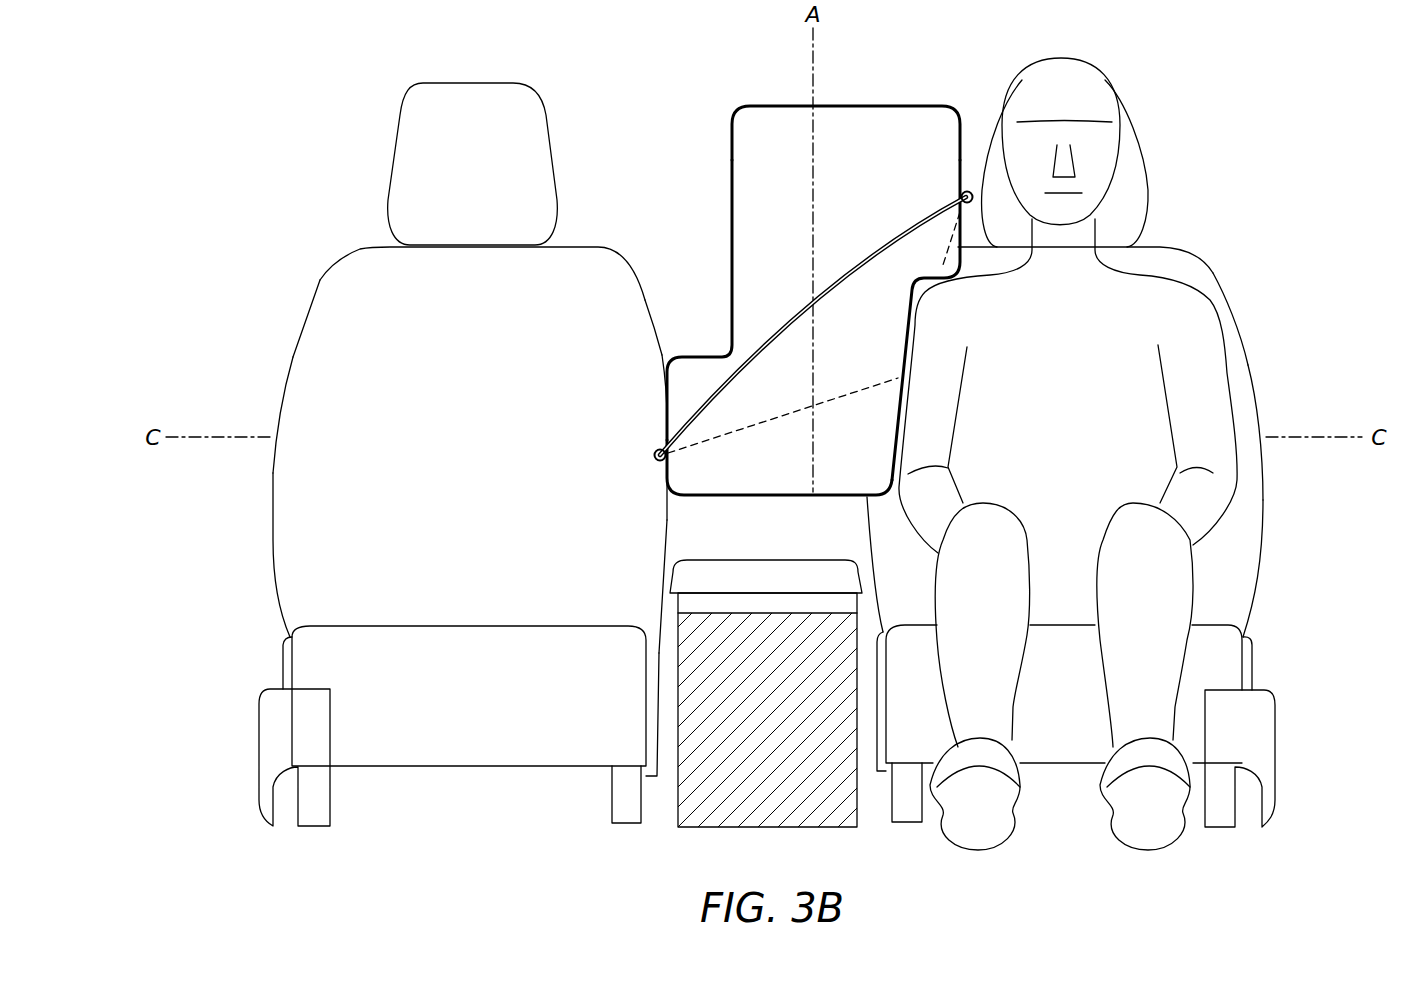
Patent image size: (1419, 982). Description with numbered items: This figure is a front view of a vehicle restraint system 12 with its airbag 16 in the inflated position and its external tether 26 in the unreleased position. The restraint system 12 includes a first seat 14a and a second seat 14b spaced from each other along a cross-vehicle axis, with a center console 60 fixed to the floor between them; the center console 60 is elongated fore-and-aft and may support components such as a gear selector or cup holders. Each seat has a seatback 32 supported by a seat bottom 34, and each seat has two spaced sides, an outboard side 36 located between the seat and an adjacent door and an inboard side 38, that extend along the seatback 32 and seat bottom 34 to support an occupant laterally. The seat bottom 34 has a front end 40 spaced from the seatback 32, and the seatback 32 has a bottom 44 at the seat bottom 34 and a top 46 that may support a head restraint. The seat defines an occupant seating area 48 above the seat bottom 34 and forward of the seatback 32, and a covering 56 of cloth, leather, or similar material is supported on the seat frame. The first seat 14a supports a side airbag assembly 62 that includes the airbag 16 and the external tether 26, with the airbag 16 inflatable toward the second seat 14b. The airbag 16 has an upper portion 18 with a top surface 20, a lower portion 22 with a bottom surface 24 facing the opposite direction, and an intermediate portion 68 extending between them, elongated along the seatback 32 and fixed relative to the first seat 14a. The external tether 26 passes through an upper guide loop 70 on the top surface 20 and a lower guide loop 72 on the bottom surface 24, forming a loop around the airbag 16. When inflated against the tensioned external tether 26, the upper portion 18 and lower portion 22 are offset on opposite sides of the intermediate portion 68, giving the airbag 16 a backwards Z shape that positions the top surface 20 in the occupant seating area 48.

The restraint system 12 is at (697, 78).
The first seat 14a is at (1216, 112).
The second seat 14b is at (318, 112).
The airbag 16 is at (793, 97).
The upper portion 18 is at (887, 103).
The top surface 20 is at (966, 146).
The lower portion 22 is at (772, 495).
The bottom surface 24 is at (660, 392).
The external tether 26 is at (877, 248).
The seatback 32 is at (307, 310).
The seat bottom 34 is at (290, 665).
The outboard side 36 is at (283, 383).
The inboard side 38 is at (662, 587).
The front end 40 is at (466, 627).
The bottom 44 is at (283, 613).
The top 46 is at (341, 253).
The occupant seating area 48 is at (340, 488).
The covering 56 is at (454, 369).
The center console 60 is at (765, 558).
The side airbag assembly 62 is at (717, 150).
The intermediate portion 68 is at (896, 413).
The upper guide loop 70 is at (972, 204).
The lower guide loop 72 is at (654, 452).